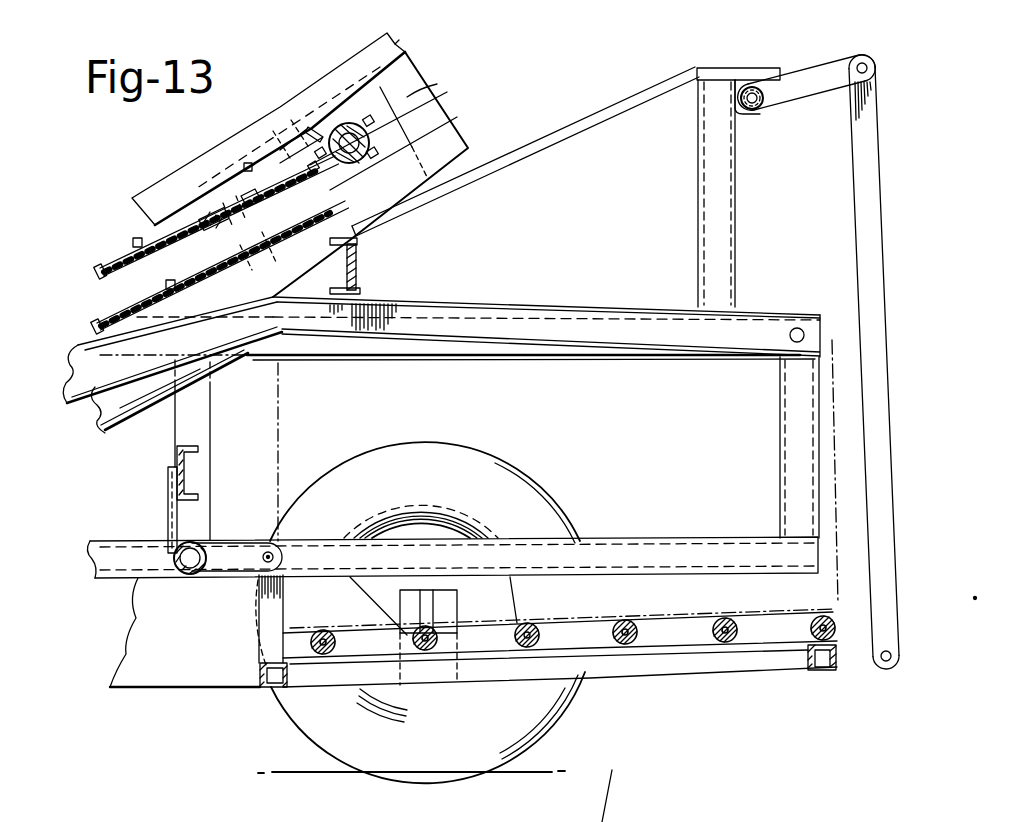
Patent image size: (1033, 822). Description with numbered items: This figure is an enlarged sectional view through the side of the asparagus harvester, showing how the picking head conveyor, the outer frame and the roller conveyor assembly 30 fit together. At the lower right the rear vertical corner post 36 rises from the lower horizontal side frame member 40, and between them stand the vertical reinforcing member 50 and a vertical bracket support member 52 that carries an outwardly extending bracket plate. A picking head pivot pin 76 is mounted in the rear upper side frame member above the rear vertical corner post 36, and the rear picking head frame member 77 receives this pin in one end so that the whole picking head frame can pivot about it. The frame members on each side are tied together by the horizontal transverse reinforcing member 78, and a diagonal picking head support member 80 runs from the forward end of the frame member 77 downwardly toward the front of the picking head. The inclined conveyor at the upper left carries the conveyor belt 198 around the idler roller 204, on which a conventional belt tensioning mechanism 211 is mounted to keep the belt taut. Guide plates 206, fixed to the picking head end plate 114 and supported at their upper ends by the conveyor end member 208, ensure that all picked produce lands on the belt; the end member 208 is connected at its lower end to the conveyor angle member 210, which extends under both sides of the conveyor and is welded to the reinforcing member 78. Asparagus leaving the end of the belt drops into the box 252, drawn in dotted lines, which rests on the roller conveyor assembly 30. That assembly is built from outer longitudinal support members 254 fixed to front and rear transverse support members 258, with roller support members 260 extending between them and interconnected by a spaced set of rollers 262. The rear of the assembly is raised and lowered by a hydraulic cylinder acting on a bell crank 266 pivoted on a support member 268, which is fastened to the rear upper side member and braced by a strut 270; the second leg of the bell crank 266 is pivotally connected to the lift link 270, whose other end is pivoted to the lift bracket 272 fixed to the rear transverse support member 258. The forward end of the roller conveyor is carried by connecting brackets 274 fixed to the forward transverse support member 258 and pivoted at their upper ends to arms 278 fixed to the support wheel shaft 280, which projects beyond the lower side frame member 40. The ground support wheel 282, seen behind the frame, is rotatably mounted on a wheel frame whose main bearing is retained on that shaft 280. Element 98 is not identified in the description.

The roller conveyor assembly 30 is at (759, 702).
The rear vertical corner post 36 is at (790, 455).
The lower horizontal side frame member 40 is at (687, 547).
The vertical reinforcing member 50 is at (202, 418).
The vertical bracket support member 52 is at (200, 448).
The picking head pivot pin 76 is at (799, 326).
The rear picking head frame member 77 is at (507, 312).
The horizontal transverse reinforcing member 78 is at (356, 272).
The diagonal picking head support member 80 is at (128, 400).
The frame member 98 is at (329, 357).
The picking head end plate 114 is at (388, 37).
The conveyor belt 198 is at (428, 86).
The idler roller 204 is at (370, 158).
The guide plate 206 is at (366, 52).
The conveyor end member 208 is at (423, 73).
The conveyor angle member 210 is at (437, 181).
The belt tensioning mechanism 211 is at (308, 132).
The box 252 is at (830, 423).
The outer longitudinal support member 254 is at (682, 665).
The transverse support member 258 is at (267, 693).
The roller support member 260 is at (680, 625).
The roller 262 is at (537, 623).
The bell crank 266 is at (817, 73).
The support member 268 is at (736, 223).
The strut 270 is at (630, 133).
The lift bracket 272 is at (862, 663).
The connecting bracket 274 is at (260, 622).
The arm 278 is at (223, 550).
The support wheel shaft 280 is at (195, 578).
The ground support wheel 282 is at (560, 727).